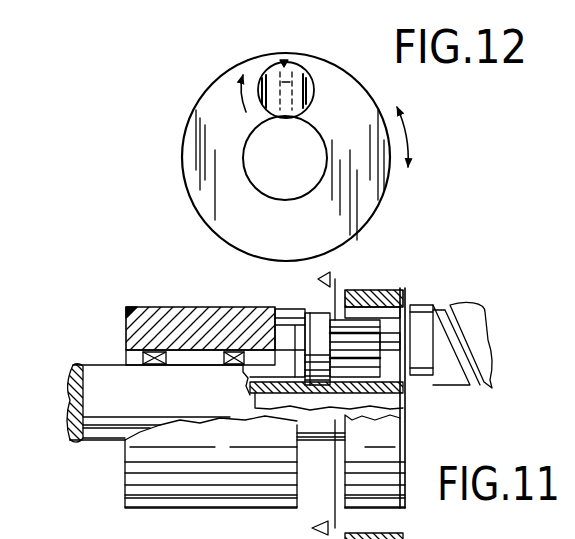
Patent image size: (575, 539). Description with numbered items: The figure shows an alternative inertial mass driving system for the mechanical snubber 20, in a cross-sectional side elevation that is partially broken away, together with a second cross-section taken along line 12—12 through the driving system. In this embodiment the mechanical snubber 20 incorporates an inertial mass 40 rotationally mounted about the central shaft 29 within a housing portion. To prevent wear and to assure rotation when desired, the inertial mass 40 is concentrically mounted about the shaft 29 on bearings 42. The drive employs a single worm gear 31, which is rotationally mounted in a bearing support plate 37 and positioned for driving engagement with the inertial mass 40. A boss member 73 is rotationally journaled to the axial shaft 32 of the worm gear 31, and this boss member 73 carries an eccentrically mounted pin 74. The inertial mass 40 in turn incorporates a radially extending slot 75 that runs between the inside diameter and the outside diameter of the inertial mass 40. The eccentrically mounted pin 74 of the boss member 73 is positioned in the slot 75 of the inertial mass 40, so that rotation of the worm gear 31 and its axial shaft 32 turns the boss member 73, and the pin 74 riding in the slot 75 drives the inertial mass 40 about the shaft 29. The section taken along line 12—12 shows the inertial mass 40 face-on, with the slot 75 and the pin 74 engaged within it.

In FIG. 11, the section line 12- 12 is at (338, 404).
In FIG. 11, the mechanical snubber 20 is at (118, 503).
In FIG. 11, the shaft 29 is at (100, 372).
In FIG. 11, the worm gear 31 is at (470, 318).
In FIG. 11, the axial shaft 32 is at (407, 304).
In FIG. 11, the bearing support plate 37 is at (395, 458).
In FIG. 12, the inertial mass 40 is at (190, 158).
In FIG. 11, the inertial mass 40 is at (187, 325).
In FIG. 11, the bearings 42 is at (224, 364).
In FIG. 12, the boss member 73 is at (300, 80).
In FIG. 11, the boss member 73 is at (318, 332).
In FIG. 12, the eccentrically mounted pin 74 is at (282, 55).
In FIG. 11, the eccentrically mounted pin 74 is at (278, 308).
In FIG. 12, the radially extending slot 75 is at (290, 62).
In FIG. 11, the radially extending slot 75 is at (248, 330).